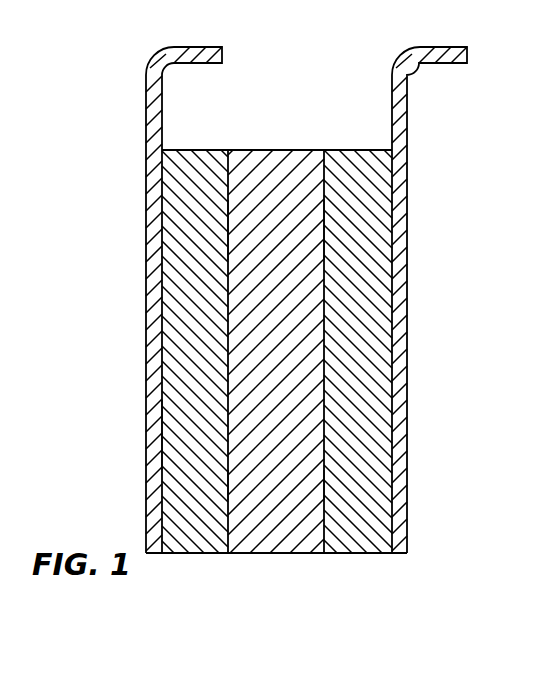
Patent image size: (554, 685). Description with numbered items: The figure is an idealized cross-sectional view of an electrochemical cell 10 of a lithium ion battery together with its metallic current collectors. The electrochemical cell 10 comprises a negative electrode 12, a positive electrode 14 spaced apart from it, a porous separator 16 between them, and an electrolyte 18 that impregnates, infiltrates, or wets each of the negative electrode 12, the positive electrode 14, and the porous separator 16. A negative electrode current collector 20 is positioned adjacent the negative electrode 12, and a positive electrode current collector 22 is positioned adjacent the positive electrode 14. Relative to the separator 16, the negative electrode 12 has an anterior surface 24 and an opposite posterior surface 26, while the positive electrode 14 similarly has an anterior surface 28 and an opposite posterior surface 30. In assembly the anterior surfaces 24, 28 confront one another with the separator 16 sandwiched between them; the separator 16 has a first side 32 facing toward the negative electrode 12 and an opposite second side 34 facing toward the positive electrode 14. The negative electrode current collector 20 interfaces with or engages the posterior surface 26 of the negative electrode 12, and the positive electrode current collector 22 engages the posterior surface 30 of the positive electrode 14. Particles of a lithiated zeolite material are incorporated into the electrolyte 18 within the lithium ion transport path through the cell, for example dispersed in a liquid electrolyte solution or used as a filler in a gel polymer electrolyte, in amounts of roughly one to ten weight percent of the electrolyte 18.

The electrochemical cell 10 is at (274, 589).
The negative electrode 12 is at (193, 553).
The positive electrode 14 is at (368, 553).
The porous separator 16 is at (262, 150).
The electrolyte 18 is at (300, 176).
The negative electrode current collector 20 is at (146, 323).
The positive electrode current collector 22 is at (407, 323).
The anterior surface 24 is at (228, 474).
The posterior surface 26 is at (162, 435).
The anterior surface 28 is at (324, 474).
The posterior surface 30 is at (392, 435).
The first side 32 is at (227, 230).
The second side 34 is at (326, 229).